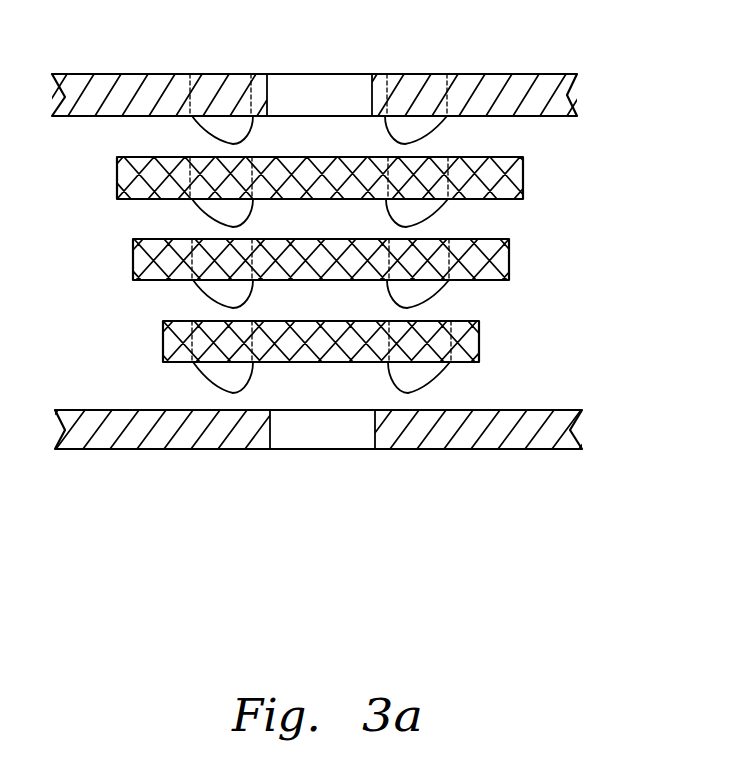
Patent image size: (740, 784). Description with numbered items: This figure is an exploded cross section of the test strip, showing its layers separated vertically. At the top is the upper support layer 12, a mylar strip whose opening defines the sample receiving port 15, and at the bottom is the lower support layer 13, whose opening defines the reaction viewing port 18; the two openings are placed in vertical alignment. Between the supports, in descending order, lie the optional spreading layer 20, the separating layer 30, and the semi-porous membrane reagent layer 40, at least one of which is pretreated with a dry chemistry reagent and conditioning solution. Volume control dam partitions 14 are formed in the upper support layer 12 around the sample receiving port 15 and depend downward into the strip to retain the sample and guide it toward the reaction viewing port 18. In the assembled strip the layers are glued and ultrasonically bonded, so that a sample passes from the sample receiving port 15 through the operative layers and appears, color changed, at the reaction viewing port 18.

The upper support layer 12 is at (123, 75).
The lower support layer 13 is at (502, 452).
The volume control dam partitions 14 is at (232, 80).
The sample receiving port 15 is at (313, 92).
The reaction viewing port 18 is at (295, 438).
The spreading layer 20 is at (117, 185).
The separating layer 30 is at (510, 267).
The semi-porous membrane reagent layer 40 is at (163, 345).